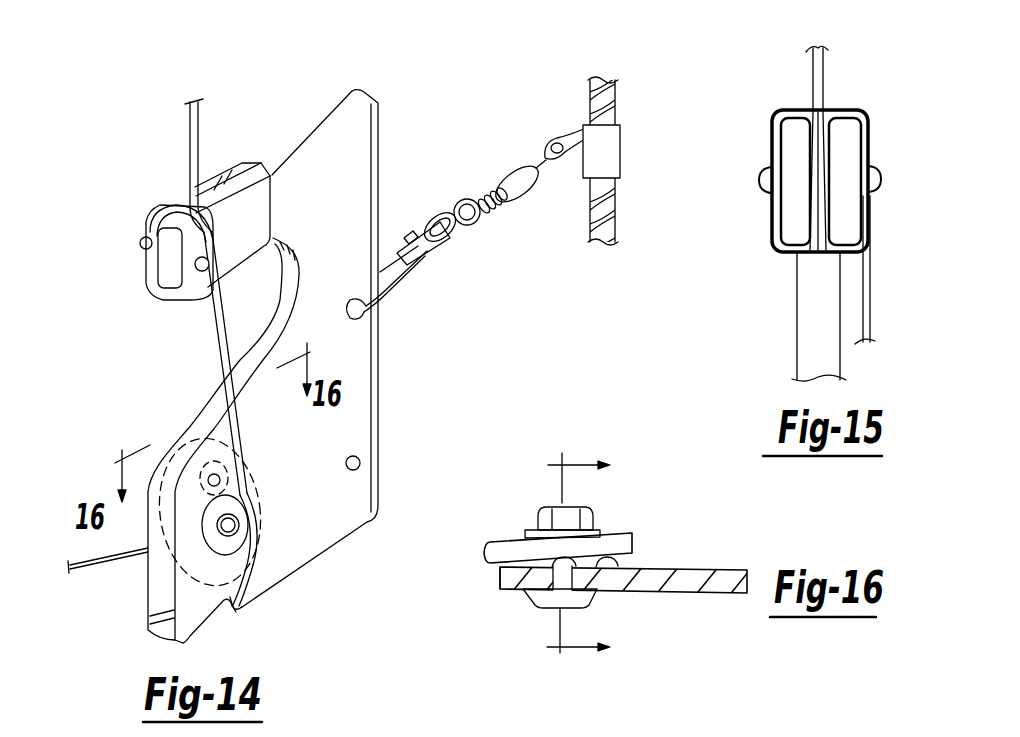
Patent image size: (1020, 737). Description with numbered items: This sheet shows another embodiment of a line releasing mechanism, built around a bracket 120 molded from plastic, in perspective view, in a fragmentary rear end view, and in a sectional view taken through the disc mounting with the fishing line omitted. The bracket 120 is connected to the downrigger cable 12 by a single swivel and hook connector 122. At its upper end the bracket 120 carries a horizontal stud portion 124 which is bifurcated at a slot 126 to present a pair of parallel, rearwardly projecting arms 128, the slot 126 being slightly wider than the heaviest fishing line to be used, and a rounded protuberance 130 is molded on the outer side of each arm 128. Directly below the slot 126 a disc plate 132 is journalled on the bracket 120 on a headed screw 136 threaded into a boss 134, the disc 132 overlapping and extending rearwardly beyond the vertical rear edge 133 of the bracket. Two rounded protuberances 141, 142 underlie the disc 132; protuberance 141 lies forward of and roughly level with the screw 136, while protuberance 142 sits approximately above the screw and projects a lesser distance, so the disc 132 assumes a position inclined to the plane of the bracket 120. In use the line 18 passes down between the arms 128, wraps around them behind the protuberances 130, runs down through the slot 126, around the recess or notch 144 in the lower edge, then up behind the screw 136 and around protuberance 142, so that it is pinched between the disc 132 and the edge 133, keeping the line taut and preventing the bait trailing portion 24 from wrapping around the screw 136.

In FIG. 14, the downrigger cable 12 is at (618, 110).
In FIG. 14, the fishing line 18 is at (197, 120).
In FIG. 15, the fishing line 18 is at (817, 72).
In FIG. 16, the fishing line 18 is at (593, 561).
In FIG. 14, the bait trailing portion of the line 24 is at (103, 565).
In FIG. 14, the bracket 120 is at (368, 190).
In FIG. 15, the bracket 120 is at (803, 303).
In FIG. 16, the bracket 120 is at (667, 583).
In FIG. 14, the swivel and hook connector 122 is at (493, 200).
In FIG. 14, the horizontal stud portion 124 is at (257, 232).
In FIG. 14, the slot 126 is at (224, 190).
In FIG. 14, the arms 128 is at (166, 296).
In FIG. 15, the arms 128 is at (787, 140).
In FIG. 14, the rounded protuberance 130 is at (209, 268).
In FIG. 15, the rounded protuberance 130 is at (872, 178).
In FIG. 14, the disc plate 132 is at (255, 478).
In FIG. 16, the disc plate 132 is at (500, 543).
In FIG. 16, the vertical rear edge 133 is at (500, 573).
In FIG. 14, the boss 134 is at (242, 497).
In FIG. 16, the boss 134 is at (533, 607).
In FIG. 16, the headed screw 136 is at (542, 510).
In FIG. 16, the rounded protuberance 141 is at (617, 563).
In FIG. 16, the rounded protuberance 142 is at (558, 588).
In FIG. 14, the recess or notch 144 is at (237, 613).